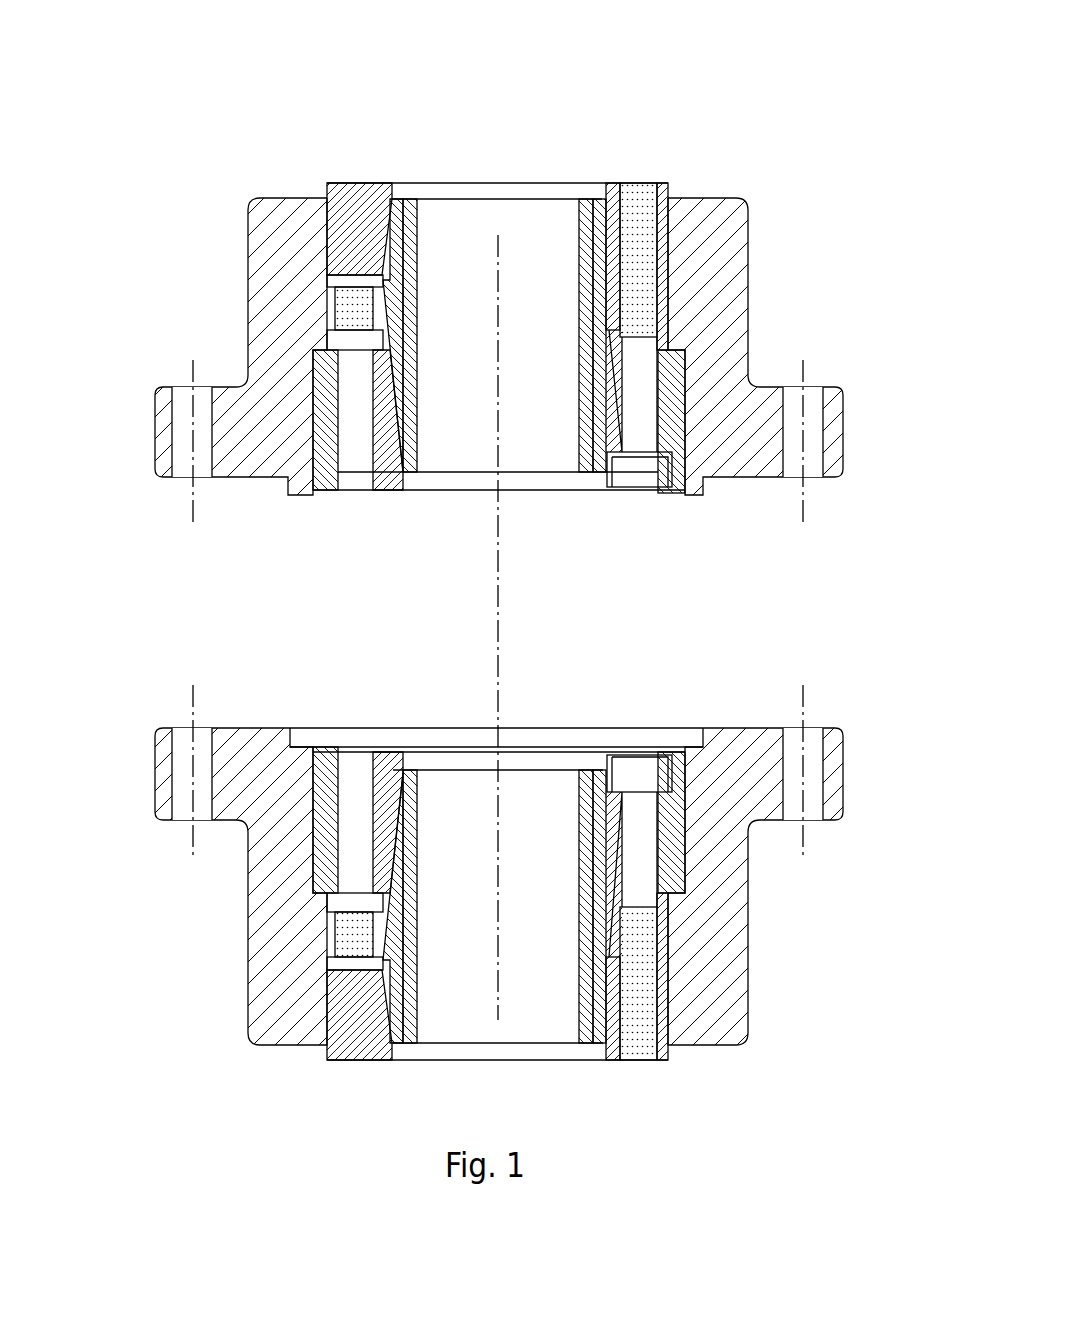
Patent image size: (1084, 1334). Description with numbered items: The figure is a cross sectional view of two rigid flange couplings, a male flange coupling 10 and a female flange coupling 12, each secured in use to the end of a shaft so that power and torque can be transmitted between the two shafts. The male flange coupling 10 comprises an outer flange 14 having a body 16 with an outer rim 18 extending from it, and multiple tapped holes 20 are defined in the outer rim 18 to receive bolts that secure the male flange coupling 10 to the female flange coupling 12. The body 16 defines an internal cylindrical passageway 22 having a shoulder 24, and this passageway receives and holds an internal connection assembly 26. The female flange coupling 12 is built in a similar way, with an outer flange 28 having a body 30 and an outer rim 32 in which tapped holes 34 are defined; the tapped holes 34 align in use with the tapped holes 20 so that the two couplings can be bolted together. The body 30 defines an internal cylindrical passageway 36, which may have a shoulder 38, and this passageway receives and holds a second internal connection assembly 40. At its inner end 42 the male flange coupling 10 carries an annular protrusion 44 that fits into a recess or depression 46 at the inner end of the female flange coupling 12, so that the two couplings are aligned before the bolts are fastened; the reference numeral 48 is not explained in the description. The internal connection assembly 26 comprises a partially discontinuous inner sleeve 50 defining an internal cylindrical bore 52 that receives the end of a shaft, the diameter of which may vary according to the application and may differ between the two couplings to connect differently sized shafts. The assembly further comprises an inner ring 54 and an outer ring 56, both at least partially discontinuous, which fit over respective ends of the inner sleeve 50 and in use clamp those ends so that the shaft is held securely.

The male flange coupling 10 is at (813, 193).
The female flange coupling 12 is at (788, 1052).
The outer flange 14 is at (499, 290).
The body 16 is at (715, 222).
The outer rim 18 is at (155, 428).
The tapped holes 20 is at (183, 478).
The internal cylindrical passageway 22 is at (312, 433).
The shoulder 24 is at (322, 337).
The internal connection assembly 26 is at (636, 140).
The outer flange 28 is at (499, 921).
The body 30 is at (710, 1022).
The outer rim 32 is at (155, 766).
The tapped holes 34 is at (183, 730).
The internal cylindrical passageway 36 is at (328, 1010).
The shoulder 38 is at (325, 898).
The internal connection assembly 40 is at (473, 968).
The end 42 is at (582, 510).
The annular protrusion 44 is at (700, 496).
The recess or depression 46 is at (703, 736).
The plate interface 48 is at (496, 671).
The inner sleeve 50 is at (397, 185).
The internal cylindrical bore 52 is at (527, 198).
The inner ring 54 is at (382, 490).
The outer ring 56 is at (363, 183).